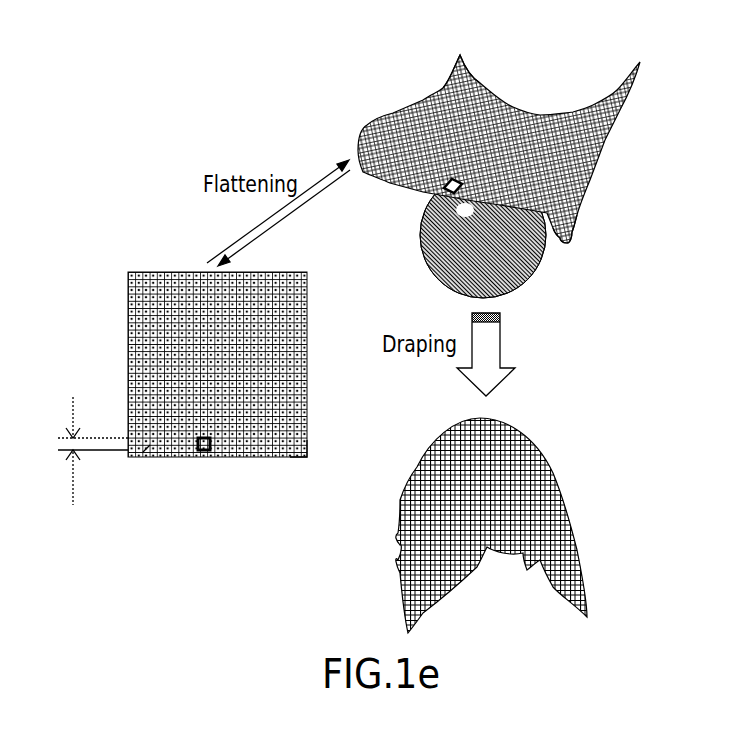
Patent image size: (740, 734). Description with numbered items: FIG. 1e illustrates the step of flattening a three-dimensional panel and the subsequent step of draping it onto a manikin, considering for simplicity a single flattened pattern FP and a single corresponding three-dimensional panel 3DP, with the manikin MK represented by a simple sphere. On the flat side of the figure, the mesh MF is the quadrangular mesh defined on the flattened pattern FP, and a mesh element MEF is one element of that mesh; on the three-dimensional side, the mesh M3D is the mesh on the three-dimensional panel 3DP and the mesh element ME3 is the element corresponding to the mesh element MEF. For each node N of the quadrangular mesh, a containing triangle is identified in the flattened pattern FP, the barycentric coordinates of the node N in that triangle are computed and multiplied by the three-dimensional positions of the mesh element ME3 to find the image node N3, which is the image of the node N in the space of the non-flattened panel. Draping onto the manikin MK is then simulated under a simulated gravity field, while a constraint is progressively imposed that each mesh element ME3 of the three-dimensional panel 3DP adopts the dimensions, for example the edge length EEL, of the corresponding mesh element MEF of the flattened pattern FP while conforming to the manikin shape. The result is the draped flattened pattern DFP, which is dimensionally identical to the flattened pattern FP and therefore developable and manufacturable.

The flattened pattern FP is at (150, 273).
The mesh of the flattened pattern MF is at (150, 445).
The mesh element of the flattened pattern MEF is at (203, 452).
The node N is at (307, 457).
The edge length EEL is at (90, 438).
The manikin MK is at (528, 283).
The mesh of the 3D panel M3D is at (402, 112).
The 3D panel 3DP is at (478, 75).
The mesh element of the 3D panel ME3 is at (430, 193).
The 3D image node N3 is at (573, 242).
The draped flattened pattern DFP is at (565, 500).